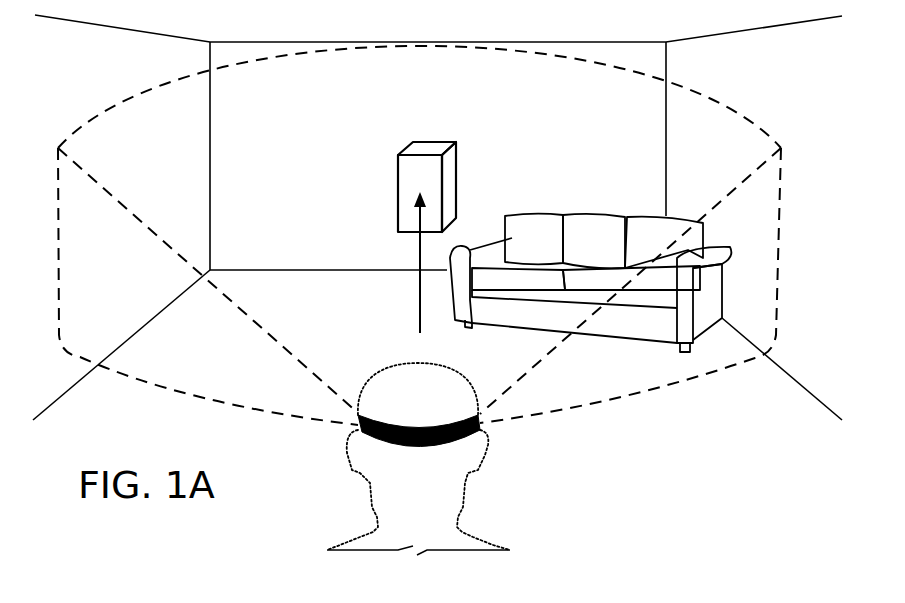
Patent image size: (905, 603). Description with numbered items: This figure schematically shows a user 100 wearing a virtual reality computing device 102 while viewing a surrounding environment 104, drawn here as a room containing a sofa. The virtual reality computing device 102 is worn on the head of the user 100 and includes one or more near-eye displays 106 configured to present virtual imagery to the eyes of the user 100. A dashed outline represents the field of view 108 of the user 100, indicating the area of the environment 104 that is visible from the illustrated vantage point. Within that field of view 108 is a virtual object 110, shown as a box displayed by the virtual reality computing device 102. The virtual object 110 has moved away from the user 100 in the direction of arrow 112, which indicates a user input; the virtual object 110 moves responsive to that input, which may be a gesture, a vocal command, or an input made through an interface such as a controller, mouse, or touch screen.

The user 100 is at (427, 459).
The virtual reality computing device 102 is at (486, 449).
The surrounding environment 104 is at (133, 54).
The near-eye display 106 is at (358, 426).
The field of view 108 is at (112, 117).
The virtual object 110 is at (407, 152).
The arrow 112 is at (418, 278).